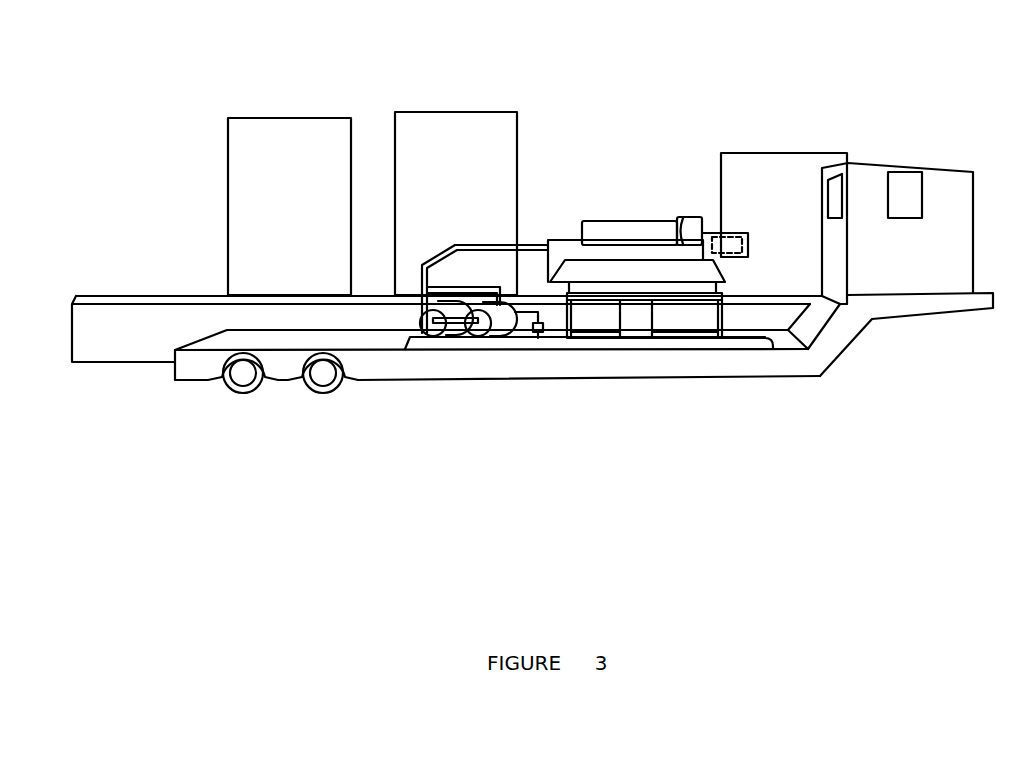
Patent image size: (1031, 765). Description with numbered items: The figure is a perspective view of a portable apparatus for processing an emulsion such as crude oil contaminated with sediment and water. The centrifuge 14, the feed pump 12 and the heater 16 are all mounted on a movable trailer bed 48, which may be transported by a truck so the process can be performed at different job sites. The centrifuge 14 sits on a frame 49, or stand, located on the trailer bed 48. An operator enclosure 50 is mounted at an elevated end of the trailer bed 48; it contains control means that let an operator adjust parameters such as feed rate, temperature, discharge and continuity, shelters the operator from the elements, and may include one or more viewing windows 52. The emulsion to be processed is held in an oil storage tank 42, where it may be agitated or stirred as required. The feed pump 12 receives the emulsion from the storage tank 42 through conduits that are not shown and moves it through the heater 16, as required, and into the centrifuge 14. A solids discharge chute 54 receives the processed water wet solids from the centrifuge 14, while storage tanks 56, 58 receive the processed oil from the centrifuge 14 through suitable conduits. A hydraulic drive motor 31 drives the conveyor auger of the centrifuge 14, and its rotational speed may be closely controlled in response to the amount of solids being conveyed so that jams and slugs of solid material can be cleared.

The feed pump 12 is at (538, 333).
The centrifuge 14 is at (633, 222).
The heater 16 is at (480, 325).
The hydraulic drive motor 31 is at (736, 236).
The oil storage tank 42 is at (802, 153).
The trailer bed 48 is at (390, 365).
The frame 49 is at (717, 302).
The operator enclosure 50 is at (960, 170).
The viewing windows 52 is at (903, 183).
The solids discharge chute 54 is at (625, 330).
The storage tank 56 is at (280, 118).
The storage tank 58 is at (450, 112).